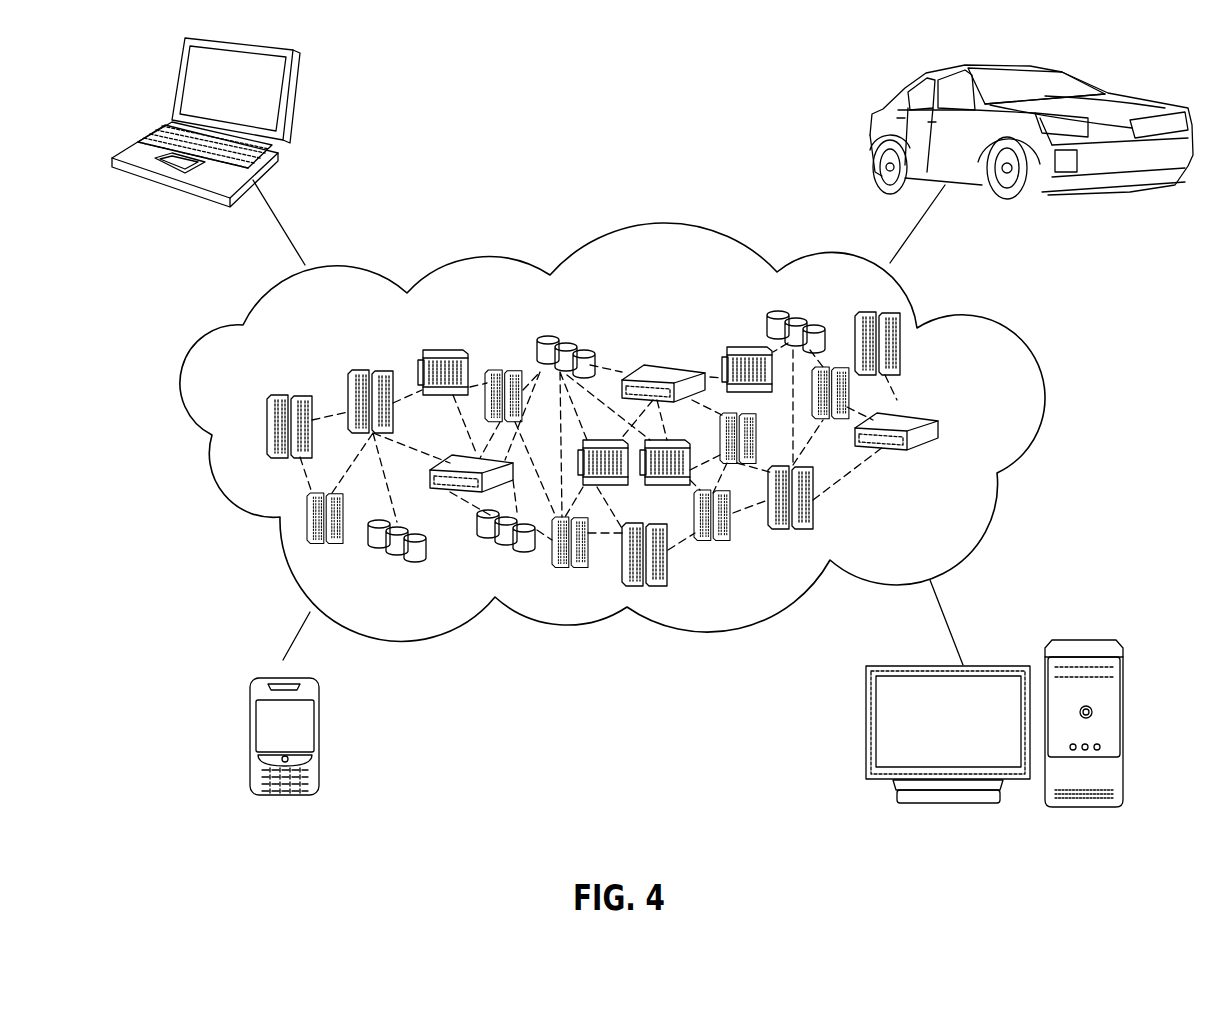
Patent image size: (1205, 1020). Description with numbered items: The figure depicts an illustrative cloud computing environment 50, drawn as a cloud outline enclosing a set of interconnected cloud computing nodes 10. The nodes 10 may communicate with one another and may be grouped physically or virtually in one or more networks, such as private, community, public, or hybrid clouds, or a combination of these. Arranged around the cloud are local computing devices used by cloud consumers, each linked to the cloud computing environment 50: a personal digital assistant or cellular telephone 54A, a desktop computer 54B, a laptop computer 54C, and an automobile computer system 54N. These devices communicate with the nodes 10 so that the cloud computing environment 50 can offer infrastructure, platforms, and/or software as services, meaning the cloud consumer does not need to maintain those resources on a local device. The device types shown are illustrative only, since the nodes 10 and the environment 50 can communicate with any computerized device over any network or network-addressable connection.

The cloud computing nodes 10 is at (982, 427).
The cloud computing environment 50 is at (1008, 338).
The personal digital assistant or cellular telephone 54A is at (250, 740).
The desktop computer 54B is at (1092, 638).
The laptop computer 54C is at (292, 105).
The automobile computer system 54N is at (876, 108).